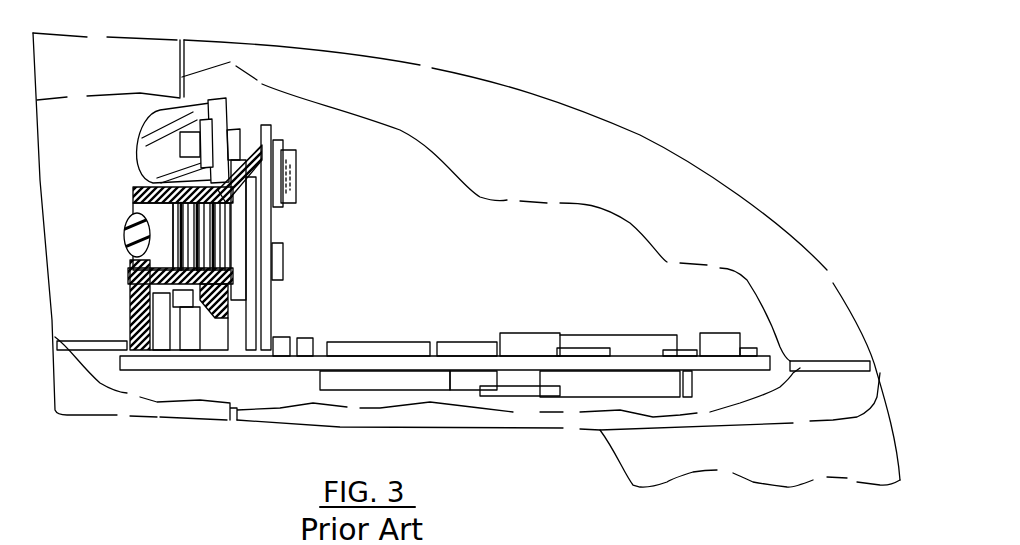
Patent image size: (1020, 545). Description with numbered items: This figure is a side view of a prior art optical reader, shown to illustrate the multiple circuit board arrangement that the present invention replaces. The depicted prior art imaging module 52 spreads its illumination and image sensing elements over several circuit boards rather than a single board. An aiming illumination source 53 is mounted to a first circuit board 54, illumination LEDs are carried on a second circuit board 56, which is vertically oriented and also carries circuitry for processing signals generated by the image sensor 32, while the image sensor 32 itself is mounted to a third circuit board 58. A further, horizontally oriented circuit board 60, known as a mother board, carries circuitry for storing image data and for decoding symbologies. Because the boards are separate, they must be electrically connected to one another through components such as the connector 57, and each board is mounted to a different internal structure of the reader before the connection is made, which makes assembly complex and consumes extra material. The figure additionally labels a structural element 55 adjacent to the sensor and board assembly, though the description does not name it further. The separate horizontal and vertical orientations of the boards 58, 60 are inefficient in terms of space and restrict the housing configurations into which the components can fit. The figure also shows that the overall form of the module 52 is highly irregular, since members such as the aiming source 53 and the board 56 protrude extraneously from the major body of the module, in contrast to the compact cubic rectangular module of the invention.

The image sensor 32 is at (284, 265).
The prior art imaging module 52 is at (345, 139).
The aiming illumination source 53 is at (196, 97).
The first circuit board 54 is at (233, 130).
The lens mount 55 is at (130, 312).
The second circuit board 56 is at (175, 362).
The connector 57 is at (203, 347).
The third circuit board 58 is at (273, 215).
The mother board 60 is at (633, 362).